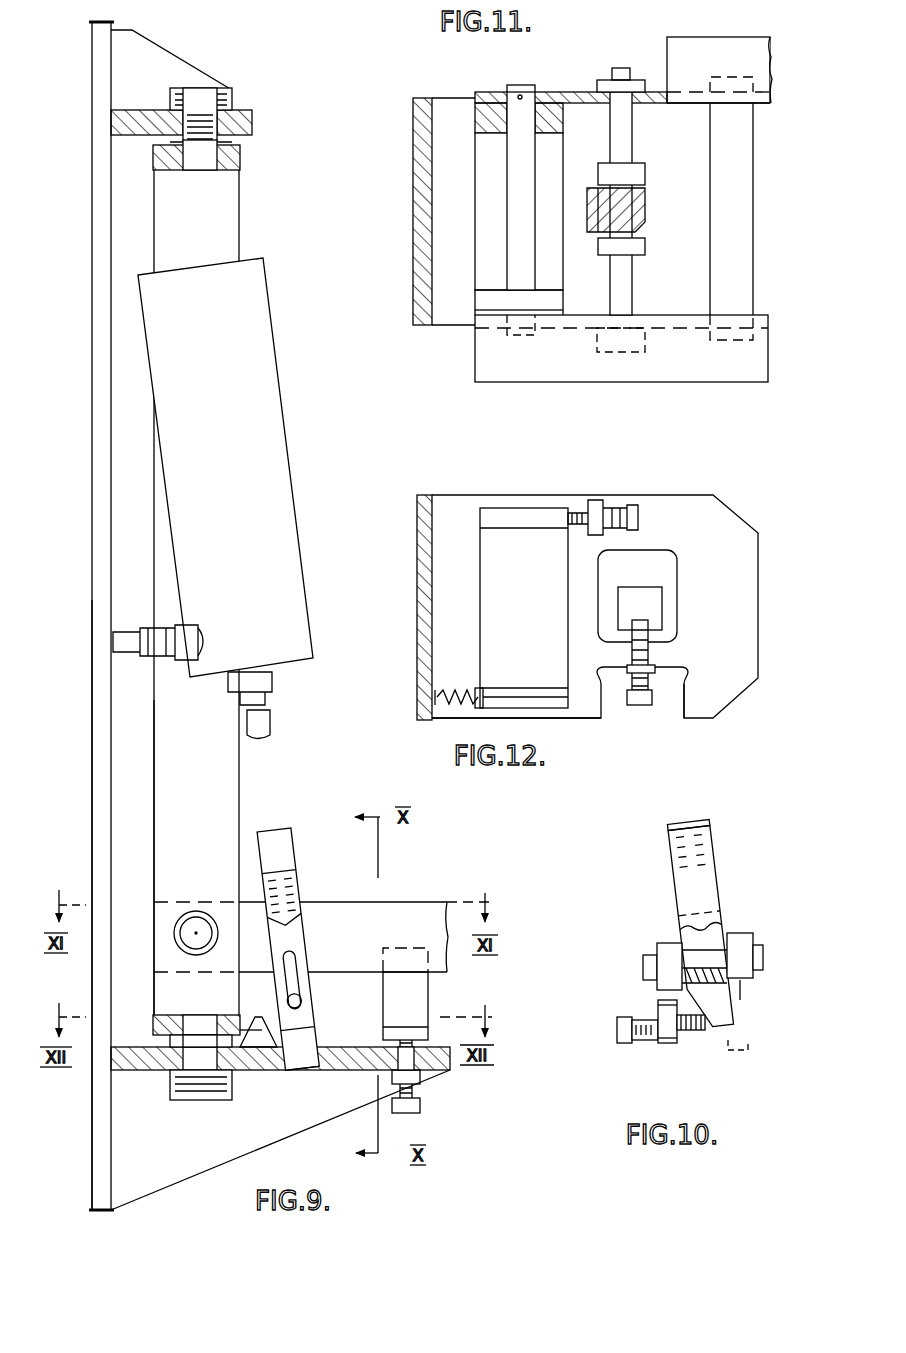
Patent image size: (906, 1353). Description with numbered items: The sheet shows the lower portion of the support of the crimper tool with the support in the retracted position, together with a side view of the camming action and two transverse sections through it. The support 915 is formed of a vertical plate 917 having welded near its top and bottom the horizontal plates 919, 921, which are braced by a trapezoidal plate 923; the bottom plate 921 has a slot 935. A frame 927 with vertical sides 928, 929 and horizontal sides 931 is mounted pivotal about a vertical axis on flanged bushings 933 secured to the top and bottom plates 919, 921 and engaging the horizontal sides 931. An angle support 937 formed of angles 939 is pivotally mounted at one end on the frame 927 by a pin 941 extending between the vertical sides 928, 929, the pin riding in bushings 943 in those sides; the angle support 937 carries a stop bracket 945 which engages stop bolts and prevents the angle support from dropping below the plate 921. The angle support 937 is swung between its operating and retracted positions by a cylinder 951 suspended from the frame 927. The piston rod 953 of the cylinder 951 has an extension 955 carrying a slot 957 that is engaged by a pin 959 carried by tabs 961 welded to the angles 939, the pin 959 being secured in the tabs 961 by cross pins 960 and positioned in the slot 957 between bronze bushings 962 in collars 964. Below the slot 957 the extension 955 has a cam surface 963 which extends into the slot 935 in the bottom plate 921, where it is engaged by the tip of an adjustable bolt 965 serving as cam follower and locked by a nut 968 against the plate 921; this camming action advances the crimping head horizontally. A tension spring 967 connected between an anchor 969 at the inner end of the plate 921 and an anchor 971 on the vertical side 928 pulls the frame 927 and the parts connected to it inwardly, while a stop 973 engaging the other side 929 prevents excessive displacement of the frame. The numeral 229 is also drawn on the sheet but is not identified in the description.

In FIG. 9, the support 915 is at (92, 495).
In FIG. 9, the vertical plate 917 is at (95, 1113).
In FIG. 11, the vertical plate 917 is at (425, 155).
In FIG. 12, the vertical plate 917 is at (425, 505).
In FIG. 9, the horizontal plate 919 is at (253, 115).
In FIG. 9, the horizontal plate 921 is at (342, 1075).
In FIG. 12, the horizontal plate 921 is at (730, 520).
In FIG. 10, the horizontal plate 921 is at (665, 1038).
In FIG. 9, the trapezoidal plate 923 is at (158, 58).
In FIG. 9, the frame 927 is at (152, 805).
In FIG. 12, the vertical side 928 is at (560, 700).
In FIG. 9, the vertical side 929 is at (225, 775).
In FIG. 9, the horizontal side 931 is at (160, 1020).
In FIG. 9, the flanged bushing 933 is at (232, 142).
In FIG. 9, the slot 935 is at (325, 1045).
In FIG. 12, the slot 935 is at (665, 700).
In FIG. 11, the angle support 937 is at (517, 385).
In FIG. 11, the angle 939 is at (672, 45).
In FIG. 9, the pin 941 is at (196, 912).
In FIG. 11, the pin 941 is at (520, 181).
In FIG. 11, the bushing 943 is at (500, 92).
In FIG. 9, the stop bracket 945 is at (418, 1000).
In FIG. 11, the stop bracket 945 is at (722, 230).
In FIG. 9, the cylinder 951 is at (280, 442).
In FIG. 9, the piston rod 953 is at (268, 690).
In FIG. 10, the piston rod 953 is at (688, 825).
In FIG. 9, the extension 955 is at (300, 880).
In FIG. 11, the extension 955 is at (592, 188).
In FIG. 12, the extension 955 is at (655, 605).
In FIG. 10, the extension 955 is at (672, 858).
In FIG. 9, the slot 957 is at (300, 955).
In FIG. 9, the pin 959 is at (300, 1000).
In FIG. 11, the pin 959 is at (630, 128).
In FIG. 10, the pin 959 is at (695, 968).
In FIG. 11, the cross pin 960 is at (600, 82).
In FIG. 11, the tab 961 is at (630, 68).
In FIG. 10, the bronze bushing 962 is at (748, 985).
In FIG. 9, the cam surface 963 is at (300, 1058).
In FIG. 10, the cam surface 963 is at (718, 1030).
In FIG. 11, the collar 964 is at (648, 172).
In FIG. 10, the collar 964 is at (742, 935).
In FIG. 12, the bolt 965 is at (655, 650).
In FIG. 10, the bolt 965 is at (695, 1030).
In FIG. 12, the tension spring 967 is at (478, 690).
In FIG. 10, the nut 968 is at (650, 1010).
In FIG. 12, the anchor 969 is at (440, 690).
In FIG. 12, the anchor 971 is at (495, 695).
In FIG. 12, the stop 973 is at (582, 523).
In FIG. 12, the cylinder 229 is at (505, 515).